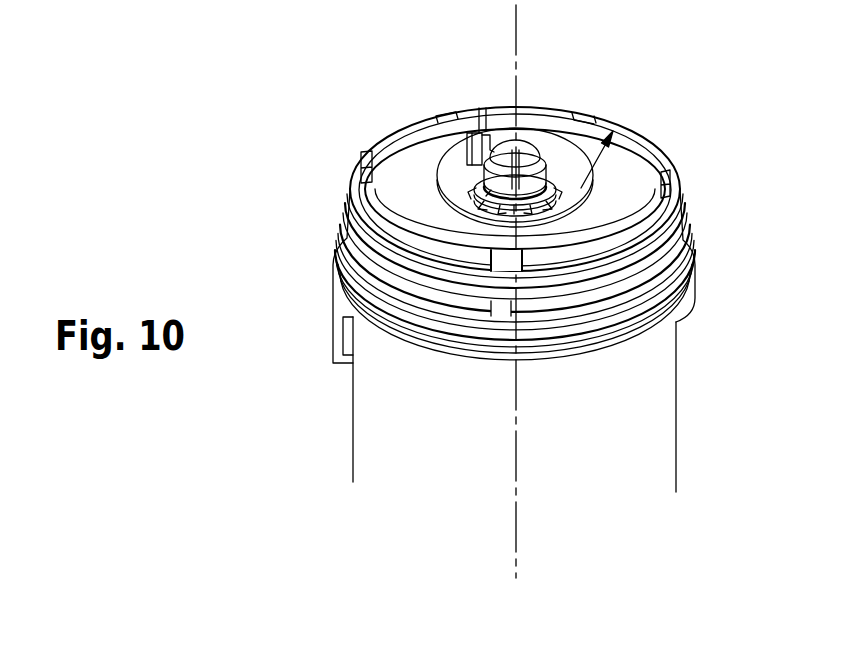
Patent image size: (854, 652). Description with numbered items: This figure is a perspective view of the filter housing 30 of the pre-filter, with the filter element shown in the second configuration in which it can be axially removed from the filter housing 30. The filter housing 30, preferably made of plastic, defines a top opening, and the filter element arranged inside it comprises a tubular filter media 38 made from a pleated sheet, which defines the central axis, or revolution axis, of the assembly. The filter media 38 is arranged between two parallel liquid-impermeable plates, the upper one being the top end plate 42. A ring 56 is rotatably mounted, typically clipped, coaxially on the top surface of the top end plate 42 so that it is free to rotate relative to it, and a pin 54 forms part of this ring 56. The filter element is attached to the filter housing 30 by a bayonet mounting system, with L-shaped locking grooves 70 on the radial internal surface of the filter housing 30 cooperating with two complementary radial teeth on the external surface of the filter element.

The filter housing 30 is at (393, 380).
The top end plate 42 is at (412, 208).
The pin 54 is at (473, 120).
The ring 56 is at (449, 190).
The locking grooves 70 is at (581, 191).
The filter media 38 is at (544, 291).